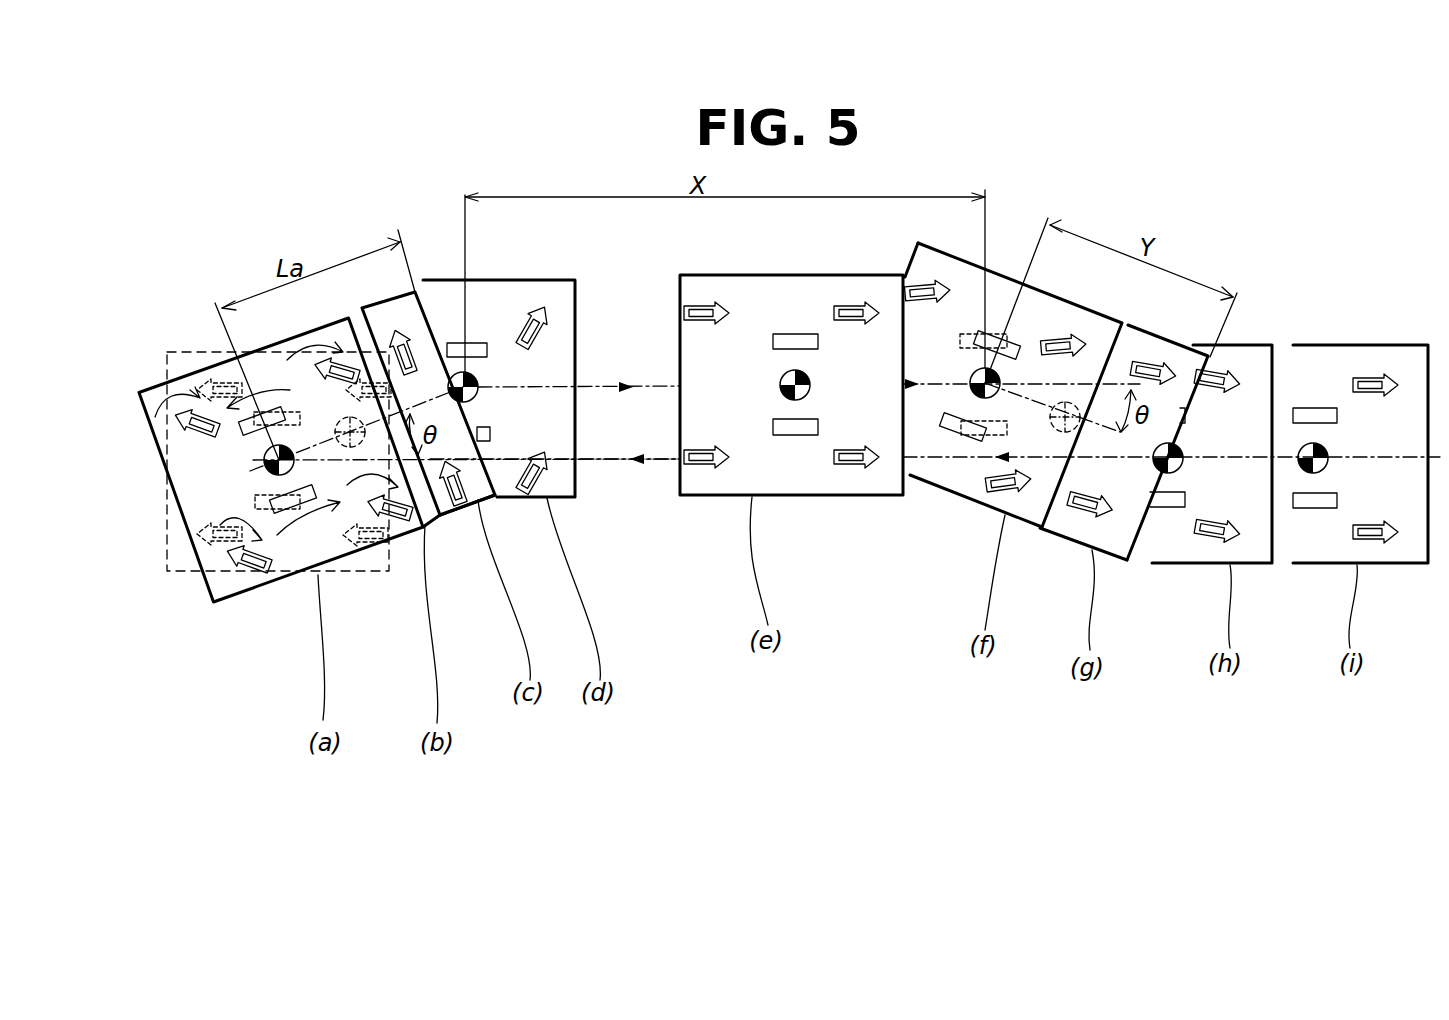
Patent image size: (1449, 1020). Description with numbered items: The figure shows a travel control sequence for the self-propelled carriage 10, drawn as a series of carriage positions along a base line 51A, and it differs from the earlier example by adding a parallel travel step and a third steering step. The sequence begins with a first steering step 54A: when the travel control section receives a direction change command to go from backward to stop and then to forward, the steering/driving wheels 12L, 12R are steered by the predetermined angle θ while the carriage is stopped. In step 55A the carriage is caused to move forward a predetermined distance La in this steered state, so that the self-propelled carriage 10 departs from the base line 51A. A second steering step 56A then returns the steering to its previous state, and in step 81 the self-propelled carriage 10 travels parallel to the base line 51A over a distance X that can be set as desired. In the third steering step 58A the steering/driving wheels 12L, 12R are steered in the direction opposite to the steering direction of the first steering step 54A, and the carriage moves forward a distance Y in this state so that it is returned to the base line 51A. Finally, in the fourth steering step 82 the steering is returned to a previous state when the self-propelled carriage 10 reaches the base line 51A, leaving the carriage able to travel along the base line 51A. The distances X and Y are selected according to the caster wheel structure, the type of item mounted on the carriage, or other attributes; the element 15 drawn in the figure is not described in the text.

The self-propelled carriage 10 is at (168, 358).
The thruster 15 is at (218, 383).
The left steering/driving wheel 12L is at (473, 342).
The right steering/driving wheel 12R is at (490, 433).
The base line 51A is at (598, 460).
The first steering step 54A is at (433, 528).
The forward movement step 55A is at (488, 508).
The second steering step 56A is at (512, 268).
The third steering step 58A is at (1013, 275).
The parallel travel step 81 is at (734, 264).
The fourth steering step 82 is at (1242, 343).